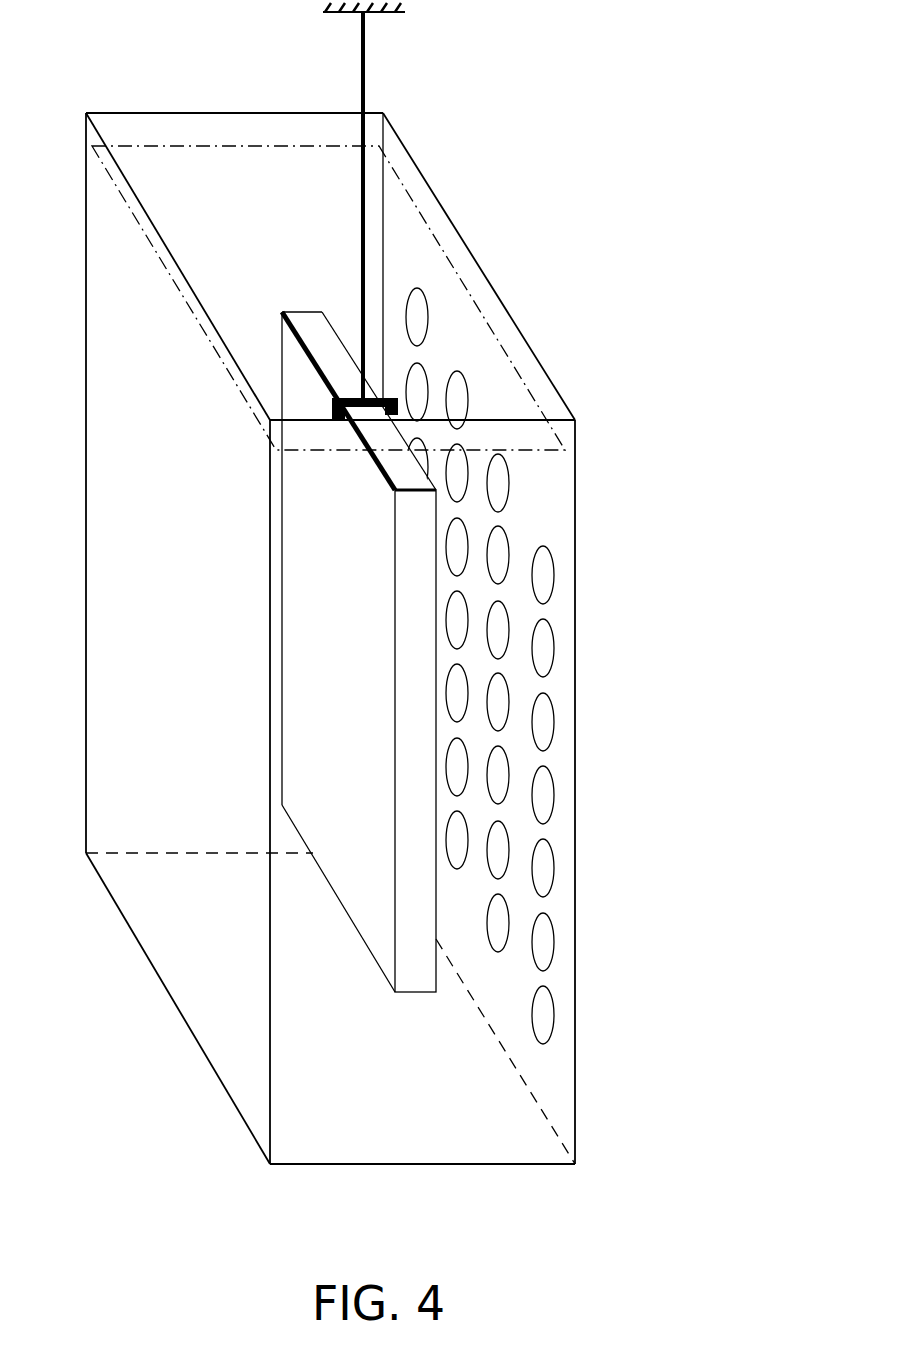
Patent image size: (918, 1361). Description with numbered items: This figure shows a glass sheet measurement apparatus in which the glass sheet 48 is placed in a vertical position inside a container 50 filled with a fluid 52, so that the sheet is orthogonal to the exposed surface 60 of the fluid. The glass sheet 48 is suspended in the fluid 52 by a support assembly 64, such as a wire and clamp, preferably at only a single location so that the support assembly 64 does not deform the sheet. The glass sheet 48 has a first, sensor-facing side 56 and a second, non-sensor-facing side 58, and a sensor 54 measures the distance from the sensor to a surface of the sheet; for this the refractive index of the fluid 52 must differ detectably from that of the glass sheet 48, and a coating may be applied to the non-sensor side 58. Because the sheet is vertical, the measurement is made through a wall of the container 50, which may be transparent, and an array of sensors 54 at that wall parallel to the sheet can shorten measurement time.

The glass sheet 48 is at (408, 458).
The container 50 is at (457, 232).
The fluid 52 is at (218, 605).
The sensor 54 is at (553, 723).
The first side 56 is at (437, 511).
The second side 58 is at (327, 745).
The exposed surface 60 is at (255, 187).
The support assembly 64 is at (376, 176).